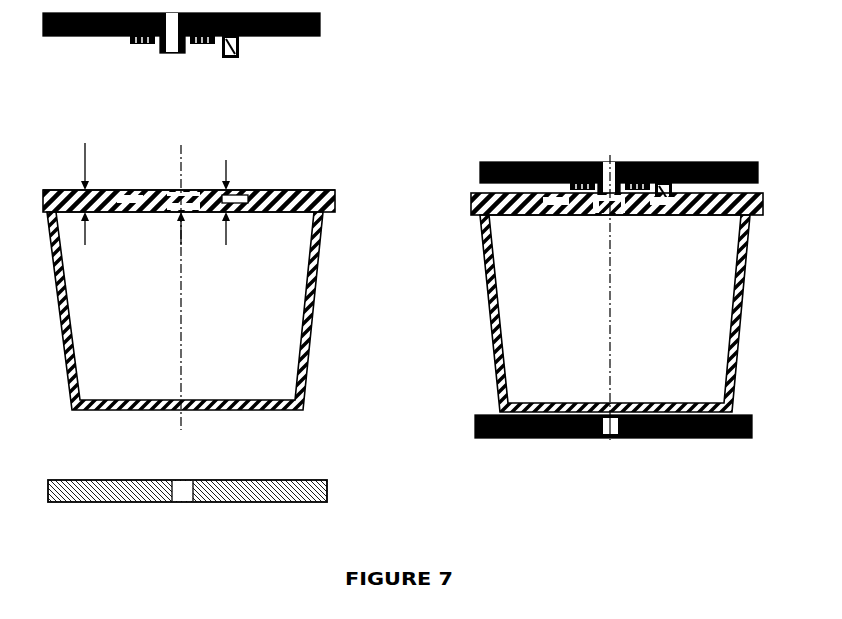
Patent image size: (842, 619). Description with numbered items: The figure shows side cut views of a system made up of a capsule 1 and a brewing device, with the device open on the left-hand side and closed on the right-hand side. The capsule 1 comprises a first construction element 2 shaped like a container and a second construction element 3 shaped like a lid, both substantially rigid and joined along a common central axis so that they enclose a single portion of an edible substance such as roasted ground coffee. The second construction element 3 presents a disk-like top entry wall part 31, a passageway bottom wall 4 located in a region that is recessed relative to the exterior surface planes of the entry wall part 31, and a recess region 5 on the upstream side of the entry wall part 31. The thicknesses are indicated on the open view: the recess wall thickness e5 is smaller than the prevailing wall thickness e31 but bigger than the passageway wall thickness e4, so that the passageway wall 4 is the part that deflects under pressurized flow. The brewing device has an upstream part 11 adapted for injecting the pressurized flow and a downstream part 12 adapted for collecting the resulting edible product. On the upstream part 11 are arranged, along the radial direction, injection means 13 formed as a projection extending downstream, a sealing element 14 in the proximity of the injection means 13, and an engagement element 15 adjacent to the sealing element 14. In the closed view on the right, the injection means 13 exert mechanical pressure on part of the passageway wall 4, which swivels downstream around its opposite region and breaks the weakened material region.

The capsule 1 is at (313, 283).
The first construction element 2 is at (410, 312).
The second construction element 3 is at (418, 202).
The top entry wall part 31 is at (187, 178).
The passageway bottom wall 4 is at (180, 187).
The recess region 5 is at (230, 187).
The upstream part 11 is at (422, 98).
The downstream part 12 is at (421, 458).
The injection means 13 is at (385, 105).
The sealing element 14 is at (144, 50).
The engagement element 15 is at (235, 52).
The prevailing wall thickness e31 is at (105, 203).
The passageway wall thickness e4 is at (163, 237).
The recess wall thickness e5 is at (209, 211).